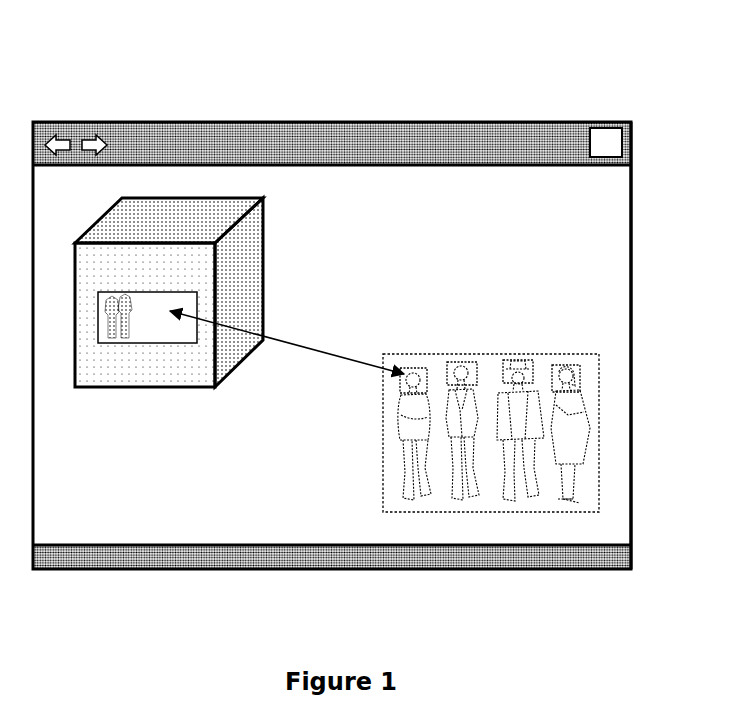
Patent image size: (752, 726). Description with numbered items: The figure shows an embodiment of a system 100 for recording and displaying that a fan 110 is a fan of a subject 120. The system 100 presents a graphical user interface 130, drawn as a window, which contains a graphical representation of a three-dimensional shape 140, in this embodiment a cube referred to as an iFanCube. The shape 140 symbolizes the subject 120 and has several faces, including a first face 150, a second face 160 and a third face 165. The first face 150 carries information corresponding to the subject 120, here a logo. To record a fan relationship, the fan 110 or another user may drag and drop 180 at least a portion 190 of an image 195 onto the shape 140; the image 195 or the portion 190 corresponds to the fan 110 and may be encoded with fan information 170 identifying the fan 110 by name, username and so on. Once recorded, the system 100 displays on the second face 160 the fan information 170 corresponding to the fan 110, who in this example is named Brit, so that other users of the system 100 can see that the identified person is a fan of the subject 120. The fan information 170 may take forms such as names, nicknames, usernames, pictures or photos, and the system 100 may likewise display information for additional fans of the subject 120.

The system 100 is at (422, 91).
The fan 110 is at (462, 411).
The subject 120 is at (103, 312).
The graphical user interface 130 is at (633, 248).
The three-dimensional shape 140 is at (189, 310).
The first face 150 is at (184, 377).
The second face 160 is at (272, 313).
The third face 165 is at (226, 209).
The fan information 170 is at (262, 235).
The drag and drop 180 is at (308, 352).
The portion of the image 190 is at (421, 372).
The image 195 is at (544, 355).